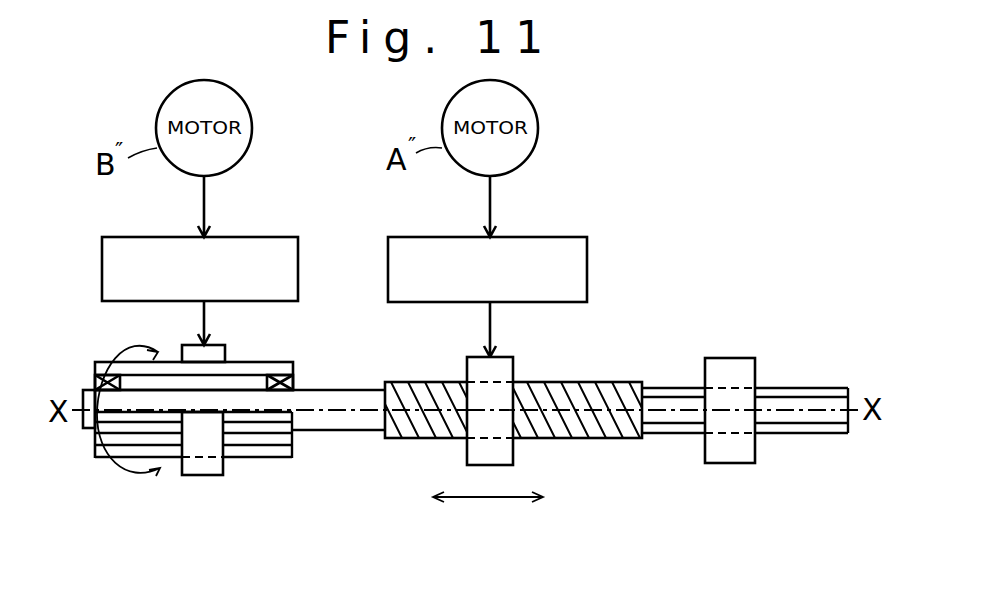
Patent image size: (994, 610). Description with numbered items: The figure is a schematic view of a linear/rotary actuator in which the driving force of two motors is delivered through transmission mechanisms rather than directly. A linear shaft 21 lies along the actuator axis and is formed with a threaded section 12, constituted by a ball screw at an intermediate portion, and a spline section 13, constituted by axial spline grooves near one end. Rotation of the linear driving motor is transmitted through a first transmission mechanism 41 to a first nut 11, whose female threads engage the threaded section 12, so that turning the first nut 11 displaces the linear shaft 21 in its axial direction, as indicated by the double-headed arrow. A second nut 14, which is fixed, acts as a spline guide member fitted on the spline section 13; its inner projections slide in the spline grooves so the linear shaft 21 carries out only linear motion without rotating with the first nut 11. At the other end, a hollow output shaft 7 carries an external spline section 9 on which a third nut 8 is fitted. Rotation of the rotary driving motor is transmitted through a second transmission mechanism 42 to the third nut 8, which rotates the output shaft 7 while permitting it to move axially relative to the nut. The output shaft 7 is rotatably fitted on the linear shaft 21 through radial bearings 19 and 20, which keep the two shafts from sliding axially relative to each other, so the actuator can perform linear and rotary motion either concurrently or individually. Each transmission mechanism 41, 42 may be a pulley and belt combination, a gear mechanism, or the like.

The output shaft 7 is at (283, 359).
The third nut 8 is at (200, 470).
The spline section 9 is at (258, 460).
The first nut 11 is at (476, 455).
The threaded section 12 is at (580, 440).
The spline section 13 is at (681, 437).
The second nut 14 is at (740, 463).
The radial bearing 19 is at (95, 386).
The radial bearing 20 is at (292, 383).
The linear shaft 21 is at (824, 385).
The first transmission mechanism 41 is at (587, 262).
The second transmission mechanism 42 is at (298, 258).